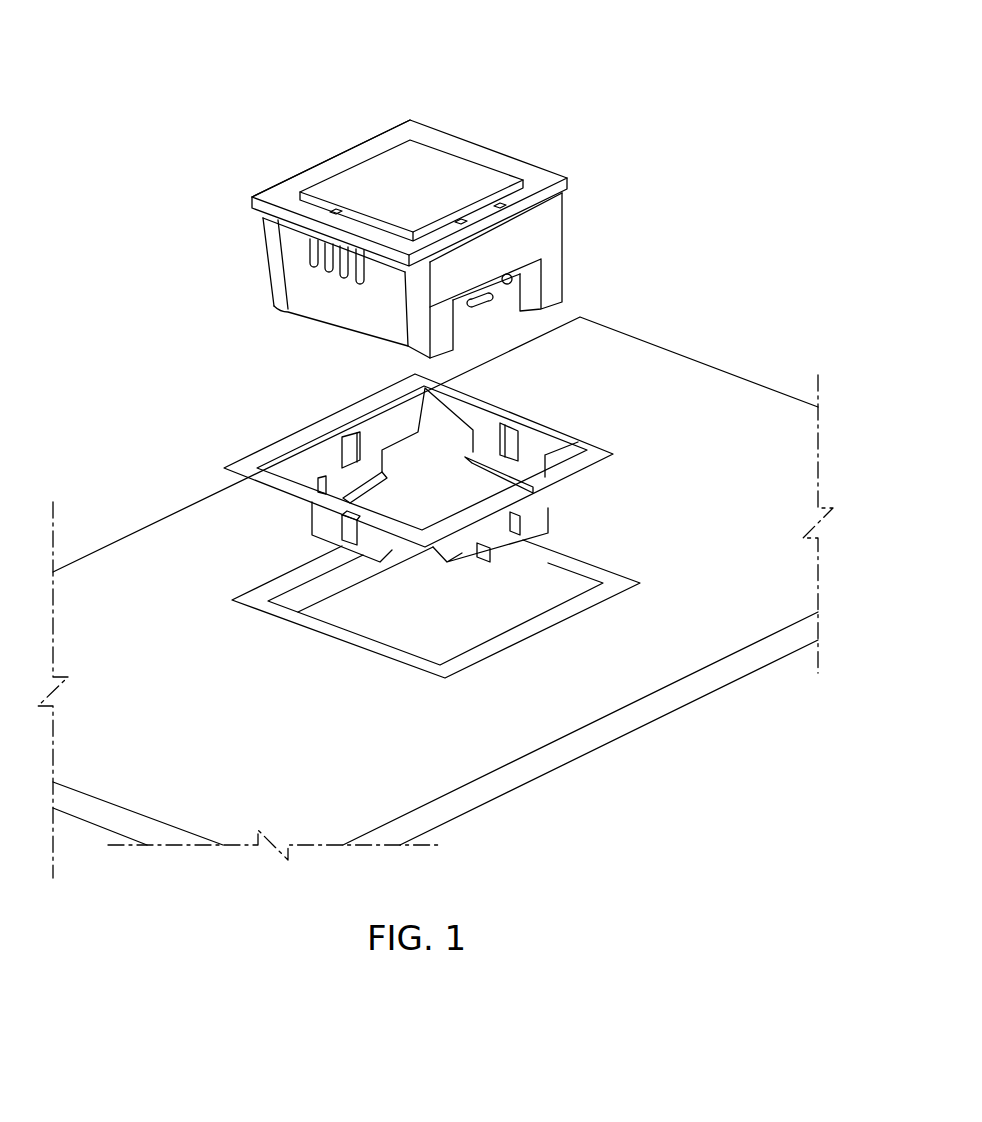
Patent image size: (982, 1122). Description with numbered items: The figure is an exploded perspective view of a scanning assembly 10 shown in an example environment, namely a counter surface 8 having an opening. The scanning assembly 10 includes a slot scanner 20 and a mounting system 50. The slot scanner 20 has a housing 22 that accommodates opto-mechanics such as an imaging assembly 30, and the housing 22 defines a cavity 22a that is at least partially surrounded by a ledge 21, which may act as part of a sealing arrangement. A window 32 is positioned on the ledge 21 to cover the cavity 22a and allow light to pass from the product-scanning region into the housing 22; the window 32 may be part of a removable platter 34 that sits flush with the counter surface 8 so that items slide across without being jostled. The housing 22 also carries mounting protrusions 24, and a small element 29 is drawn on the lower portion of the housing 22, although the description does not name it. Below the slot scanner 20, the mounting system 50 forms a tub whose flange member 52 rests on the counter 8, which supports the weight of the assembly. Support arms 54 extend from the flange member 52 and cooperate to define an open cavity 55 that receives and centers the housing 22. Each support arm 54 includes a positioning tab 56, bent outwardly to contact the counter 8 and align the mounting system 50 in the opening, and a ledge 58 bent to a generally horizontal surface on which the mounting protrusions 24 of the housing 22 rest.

The counter surface 8 is at (145, 525).
The scanning assembly 10 is at (387, 310).
The slot scanner 20 is at (456, 231).
The ledge 21 is at (535, 237).
The housing 22 is at (417, 285).
The cavity 22a is at (364, 183).
The mounting protrusions 24 is at (310, 240).
The connector 29 is at (493, 303).
The imaging assembly 30 is at (409, 175).
The window 32 is at (512, 160).
The removable platter 34 is at (447, 160).
The mounting system 50 is at (381, 466).
The flange member 52 is at (307, 425).
The support arms 54 is at (468, 415).
The open cavity 55 is at (348, 495).
The positioning tab 56 is at (513, 438).
The ledge 58 is at (376, 499).